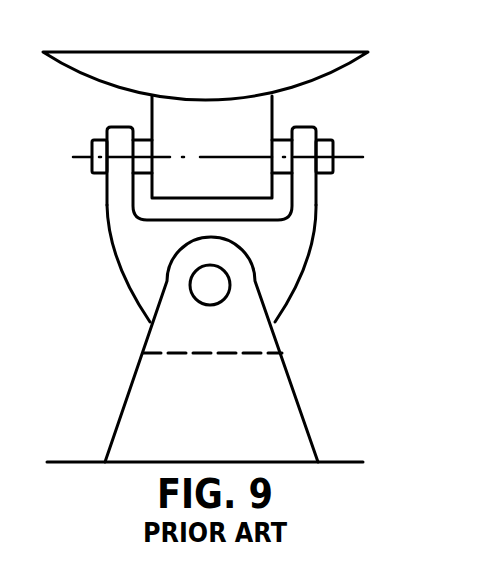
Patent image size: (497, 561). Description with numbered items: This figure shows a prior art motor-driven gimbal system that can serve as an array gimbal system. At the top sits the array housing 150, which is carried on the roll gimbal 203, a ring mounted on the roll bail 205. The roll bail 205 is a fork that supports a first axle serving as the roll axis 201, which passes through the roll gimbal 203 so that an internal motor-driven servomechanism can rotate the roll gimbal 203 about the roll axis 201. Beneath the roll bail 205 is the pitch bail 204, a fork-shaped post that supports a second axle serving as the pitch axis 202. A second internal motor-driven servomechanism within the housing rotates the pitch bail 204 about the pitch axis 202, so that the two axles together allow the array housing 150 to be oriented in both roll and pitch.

The array housing 150 is at (124, 52).
The roll axis 201 is at (366, 168).
The pitch axis 202 is at (216, 291).
The roll gimbal 203 is at (237, 143).
The pitch bail 204 is at (222, 337).
The roll bail 205 is at (141, 254).